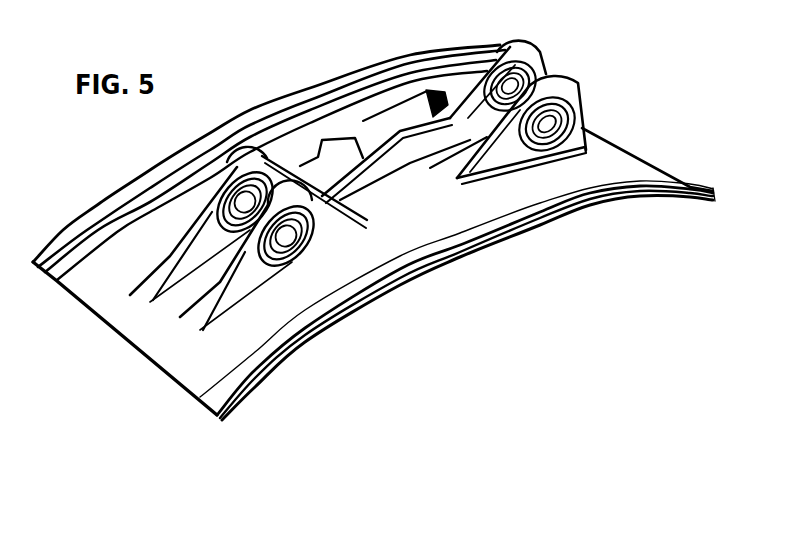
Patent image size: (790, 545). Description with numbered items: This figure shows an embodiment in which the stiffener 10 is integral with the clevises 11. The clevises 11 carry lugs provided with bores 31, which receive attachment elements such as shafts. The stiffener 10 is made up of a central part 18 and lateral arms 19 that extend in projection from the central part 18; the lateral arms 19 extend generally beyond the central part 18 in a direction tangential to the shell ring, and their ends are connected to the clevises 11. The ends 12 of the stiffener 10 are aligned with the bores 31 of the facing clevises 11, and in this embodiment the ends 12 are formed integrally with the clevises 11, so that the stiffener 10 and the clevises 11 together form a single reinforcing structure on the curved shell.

The stiffener 10 is at (317, 120).
The clevis 11 is at (558, 78).
The end of the stiffener 12 is at (347, 212).
The central part 18 is at (383, 123).
The lateral arm 19 is at (470, 62).
The bore 31 is at (290, 243).